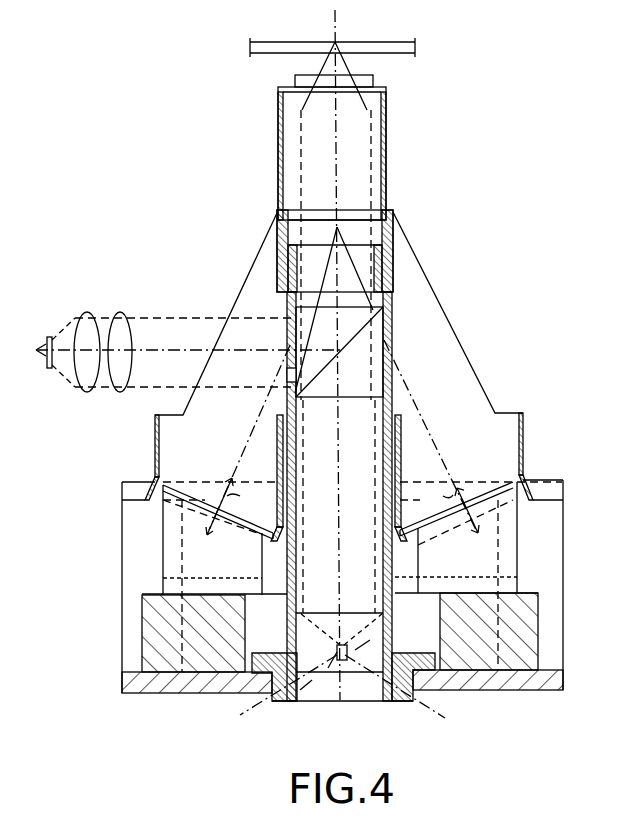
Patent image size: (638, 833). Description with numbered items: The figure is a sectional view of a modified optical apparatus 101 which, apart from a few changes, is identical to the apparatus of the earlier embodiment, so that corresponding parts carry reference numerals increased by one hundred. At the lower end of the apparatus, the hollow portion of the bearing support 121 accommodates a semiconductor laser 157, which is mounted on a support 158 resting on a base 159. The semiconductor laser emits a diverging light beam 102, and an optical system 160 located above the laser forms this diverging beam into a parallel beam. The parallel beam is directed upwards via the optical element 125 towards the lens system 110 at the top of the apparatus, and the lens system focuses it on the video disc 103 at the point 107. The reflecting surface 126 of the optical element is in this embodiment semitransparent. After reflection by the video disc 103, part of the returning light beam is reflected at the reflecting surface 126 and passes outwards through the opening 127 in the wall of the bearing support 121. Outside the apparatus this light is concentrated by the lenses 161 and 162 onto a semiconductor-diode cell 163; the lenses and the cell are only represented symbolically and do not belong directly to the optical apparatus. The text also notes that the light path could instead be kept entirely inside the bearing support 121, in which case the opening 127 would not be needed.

The optical apparatus 101 is at (425, 235).
The diverging light beam 102 is at (150, 330).
The video disc 103 is at (407, 45).
The focal point 107 is at (337, 42).
The lens system 110 is at (378, 155).
The bearing support 121 is at (392, 630).
The optical element 125 is at (360, 370).
The reflecting surface 126 is at (340, 340).
The opening 127 is at (290, 375).
The semiconductor laser 157 is at (355, 650).
The support 158 is at (340, 665).
The base 159 is at (312, 688).
The optical system 160 is at (392, 565).
The lens 161 is at (87, 392).
The lens 162 is at (120, 392).
The semiconductor-diode cell 163 is at (50, 368).